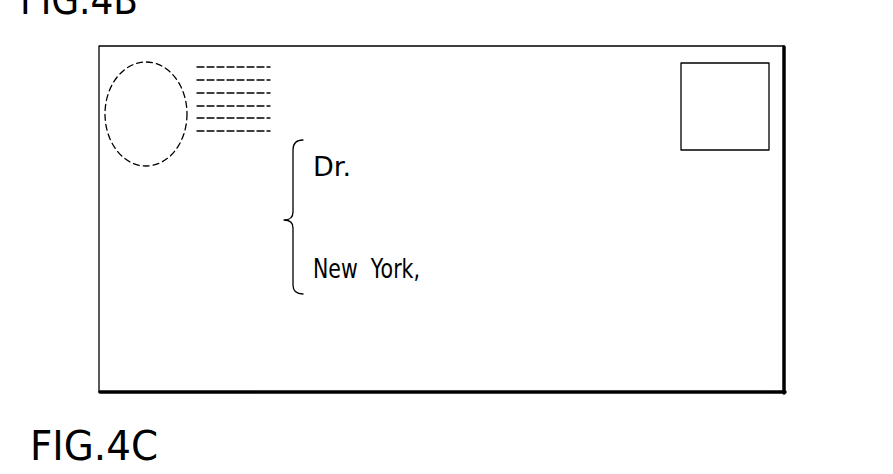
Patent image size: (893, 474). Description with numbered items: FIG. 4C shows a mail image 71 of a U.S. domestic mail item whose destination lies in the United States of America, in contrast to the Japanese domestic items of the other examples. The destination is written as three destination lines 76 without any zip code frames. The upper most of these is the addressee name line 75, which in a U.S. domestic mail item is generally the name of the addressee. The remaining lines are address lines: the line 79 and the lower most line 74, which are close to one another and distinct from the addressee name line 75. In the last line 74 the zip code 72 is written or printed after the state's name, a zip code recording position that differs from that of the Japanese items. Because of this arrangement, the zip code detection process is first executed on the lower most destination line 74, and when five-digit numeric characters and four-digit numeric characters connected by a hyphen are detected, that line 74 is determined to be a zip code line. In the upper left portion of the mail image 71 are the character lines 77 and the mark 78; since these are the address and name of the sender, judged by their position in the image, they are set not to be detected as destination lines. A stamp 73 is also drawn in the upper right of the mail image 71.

The mail image 71 is at (786, 251).
The zip code 72 is at (559, 286).
The stamp 73 is at (770, 115).
The state's name 74 is at (463, 285).
The addressee name line 75 is at (430, 146).
The destination lines 76 is at (277, 224).
The character lines 77 is at (248, 46).
The postmark 78 is at (99, 76).
The address line 79 is at (548, 213).